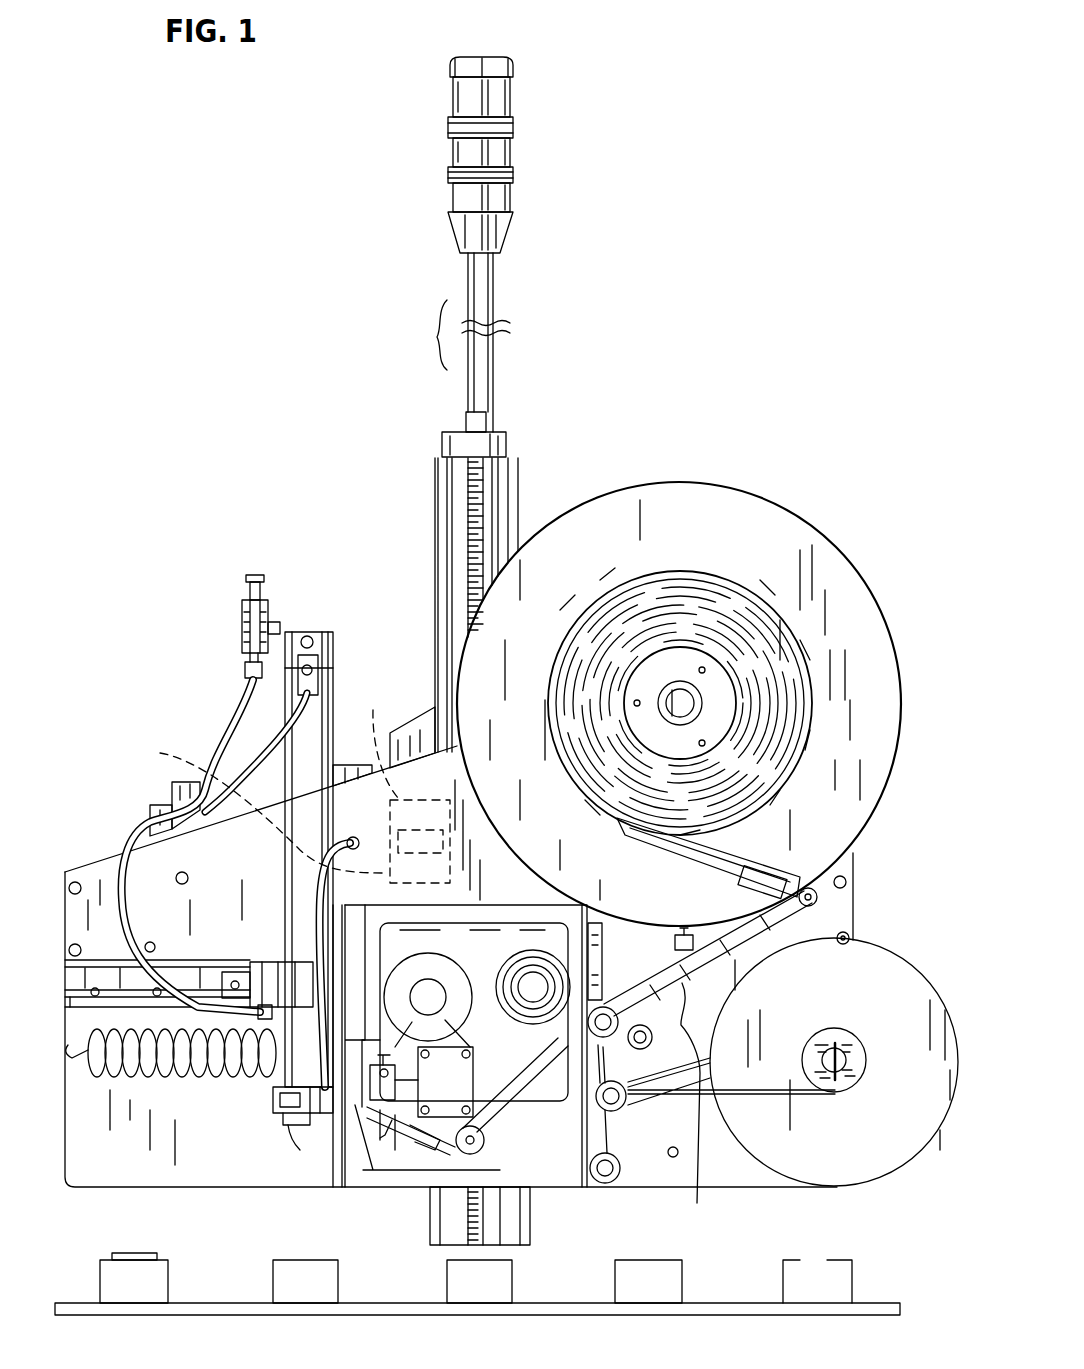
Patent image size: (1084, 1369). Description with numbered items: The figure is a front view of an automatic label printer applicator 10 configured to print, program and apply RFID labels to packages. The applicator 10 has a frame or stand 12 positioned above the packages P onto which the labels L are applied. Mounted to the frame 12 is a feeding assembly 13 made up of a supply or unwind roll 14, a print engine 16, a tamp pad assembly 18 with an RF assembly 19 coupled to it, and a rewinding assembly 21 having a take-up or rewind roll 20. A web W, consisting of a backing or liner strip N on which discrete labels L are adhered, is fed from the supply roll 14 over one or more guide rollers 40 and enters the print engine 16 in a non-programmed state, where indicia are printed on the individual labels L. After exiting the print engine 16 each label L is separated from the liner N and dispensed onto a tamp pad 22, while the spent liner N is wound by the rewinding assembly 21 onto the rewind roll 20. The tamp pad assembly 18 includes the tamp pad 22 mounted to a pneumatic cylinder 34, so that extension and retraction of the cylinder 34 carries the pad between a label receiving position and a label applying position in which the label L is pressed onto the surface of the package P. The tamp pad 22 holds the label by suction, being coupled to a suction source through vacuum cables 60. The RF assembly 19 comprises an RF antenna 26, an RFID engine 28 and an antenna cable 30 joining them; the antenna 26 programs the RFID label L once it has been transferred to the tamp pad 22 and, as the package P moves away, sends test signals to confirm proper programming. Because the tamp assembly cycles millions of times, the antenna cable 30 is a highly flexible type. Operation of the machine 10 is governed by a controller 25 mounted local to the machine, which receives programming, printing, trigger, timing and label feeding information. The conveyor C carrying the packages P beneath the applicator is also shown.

The automatic label printer applicator 10 is at (398, 570).
The frame or stand 12 is at (130, 870).
The feeding assembly 13 is at (806, 481).
The supply or unwind roll 14 is at (731, 508).
The print engine 16 is at (353, 1168).
The tamp pad assembly 18 is at (258, 1090).
The RF assembly 19 is at (347, 822).
The take-up or rewind roll 20 is at (877, 967).
The rewinding assembly 21 is at (919, 1172).
The tamp pad 22 is at (303, 1113).
The controller 25 is at (410, 779).
The RF antenna 26 is at (290, 1097).
The RFID engine 28 is at (200, 778).
The antenna cable 30 is at (345, 842).
The pneumatic cylinder 34 is at (333, 690).
The guide rollers 40 is at (803, 877).
The vacuum cables 60 is at (117, 885).
The labels L is at (757, 887).
The web W is at (790, 928).
The backing or liner strip N is at (689, 1105).
The packages P is at (682, 1288).
The conveyor C is at (870, 1302).